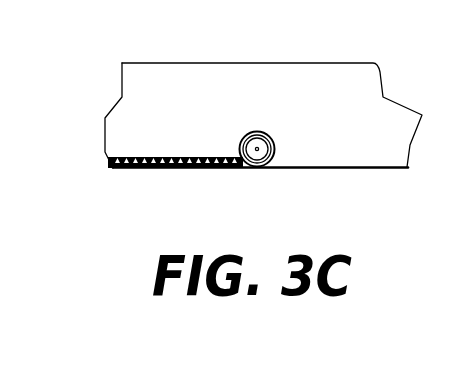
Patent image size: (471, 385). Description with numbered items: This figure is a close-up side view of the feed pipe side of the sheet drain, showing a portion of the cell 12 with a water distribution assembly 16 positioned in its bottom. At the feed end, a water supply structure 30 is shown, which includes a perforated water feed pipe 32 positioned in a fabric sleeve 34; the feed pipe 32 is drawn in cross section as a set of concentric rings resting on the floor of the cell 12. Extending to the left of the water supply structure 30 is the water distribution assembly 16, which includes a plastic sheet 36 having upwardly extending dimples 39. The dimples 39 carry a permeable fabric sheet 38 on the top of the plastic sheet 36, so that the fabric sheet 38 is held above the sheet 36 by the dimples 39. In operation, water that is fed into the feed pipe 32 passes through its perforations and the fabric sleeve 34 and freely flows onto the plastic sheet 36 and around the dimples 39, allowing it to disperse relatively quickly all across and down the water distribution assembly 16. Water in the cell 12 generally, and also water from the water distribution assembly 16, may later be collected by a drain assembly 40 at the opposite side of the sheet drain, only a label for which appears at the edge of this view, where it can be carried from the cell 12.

The cell 12 is at (320, 93).
The water distribution assembly 16 is at (132, 172).
The water supply structure 30 is at (252, 120).
The perforated water feed pipe 32 is at (258, 157).
The fabric sleeve 34 is at (275, 150).
The plastic sheet 36 is at (161, 172).
The permeable fabric sheet 38 is at (175, 156).
The dimples 39 is at (197, 160).
The drain assembly 40 is at (300, 382).